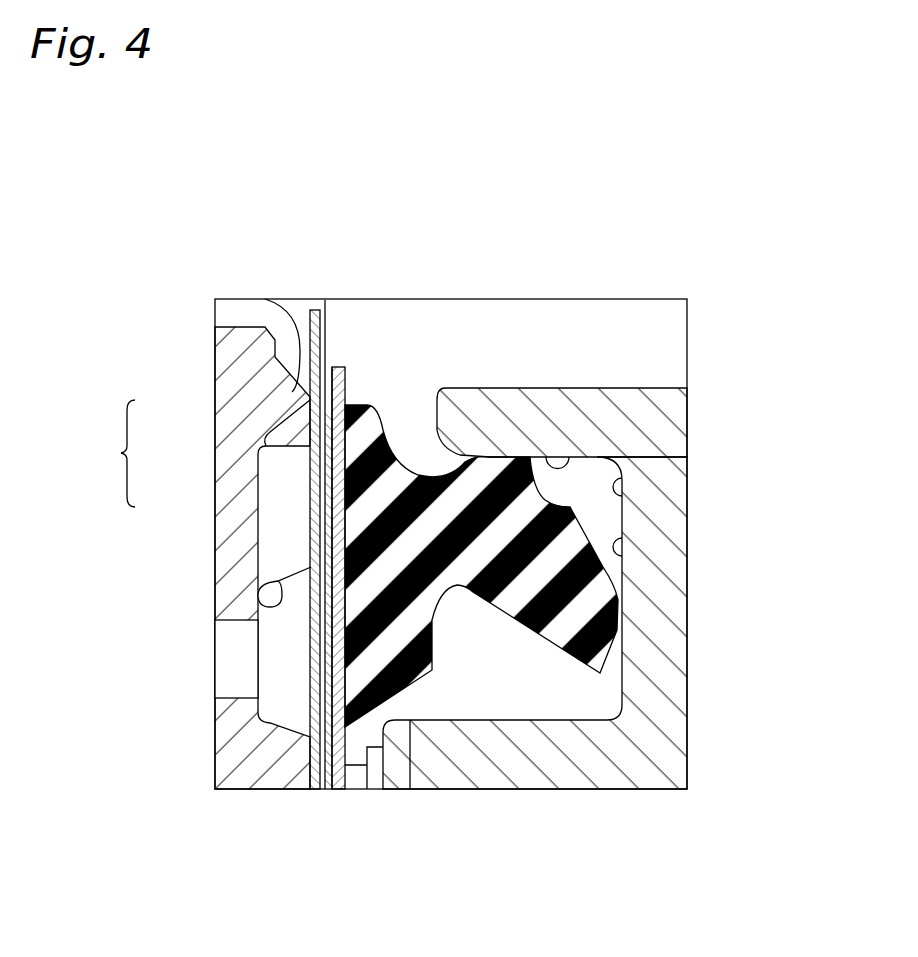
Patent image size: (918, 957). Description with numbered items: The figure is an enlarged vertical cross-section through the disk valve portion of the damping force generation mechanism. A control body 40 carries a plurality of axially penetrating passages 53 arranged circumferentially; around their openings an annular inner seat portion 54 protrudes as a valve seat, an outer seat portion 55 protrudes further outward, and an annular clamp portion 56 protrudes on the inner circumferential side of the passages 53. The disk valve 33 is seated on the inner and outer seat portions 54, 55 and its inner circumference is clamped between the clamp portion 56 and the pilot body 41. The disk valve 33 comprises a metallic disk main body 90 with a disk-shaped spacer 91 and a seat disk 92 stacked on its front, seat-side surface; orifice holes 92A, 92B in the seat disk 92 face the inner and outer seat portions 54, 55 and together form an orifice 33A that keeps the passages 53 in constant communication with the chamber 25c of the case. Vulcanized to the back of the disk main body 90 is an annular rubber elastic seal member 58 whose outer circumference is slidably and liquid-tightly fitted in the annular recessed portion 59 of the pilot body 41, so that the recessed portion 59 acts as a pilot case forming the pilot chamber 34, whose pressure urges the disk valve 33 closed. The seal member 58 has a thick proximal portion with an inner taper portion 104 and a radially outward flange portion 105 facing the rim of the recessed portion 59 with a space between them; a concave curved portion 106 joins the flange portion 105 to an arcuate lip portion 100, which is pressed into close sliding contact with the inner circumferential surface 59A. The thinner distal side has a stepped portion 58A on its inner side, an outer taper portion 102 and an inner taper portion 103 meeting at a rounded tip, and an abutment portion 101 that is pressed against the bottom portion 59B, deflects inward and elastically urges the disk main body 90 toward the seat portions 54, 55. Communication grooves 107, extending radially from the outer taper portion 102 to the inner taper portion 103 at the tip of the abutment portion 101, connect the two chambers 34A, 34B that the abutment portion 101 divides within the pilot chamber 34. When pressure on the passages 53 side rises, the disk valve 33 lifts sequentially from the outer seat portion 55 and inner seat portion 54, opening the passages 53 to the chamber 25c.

The chamber 25c is at (643, 340).
The disk valve 33 is at (337, 343).
The orifice 33A is at (101, 453).
The pilot chamber 34 is at (503, 670).
The chamber 34A is at (575, 688).
The chamber 34B is at (640, 420).
The control body 40 is at (228, 567).
The pilot body 41 is at (655, 735).
The passage 53 is at (235, 653).
The inner seat portion 54 is at (282, 602).
The outer seat portion 55 is at (267, 299).
The clamp portion 56 is at (273, 724).
The elastic seal member 58 is at (570, 540).
The stepped portion 58A is at (470, 592).
The recessed portion 59 is at (628, 548).
The inner circumferential surface 59A is at (545, 457).
The bottom portion 59B is at (607, 478).
The disk main body 90 is at (343, 367).
The spacer 91 is at (325, 300).
The seat disk 92 is at (313, 308).
The orifice hole 92A is at (306, 549).
The orifice hole 92B is at (290, 432).
The lip portion 100 is at (492, 455).
The abutment portion 101 is at (593, 658).
The outer taper portion 102 is at (615, 600).
The inner taper portion 103 is at (540, 640).
The taper portion 104 is at (417, 680).
The flange portion 105 is at (380, 405).
The curved portion 106 is at (412, 465).
The communication groove 107 is at (607, 655).